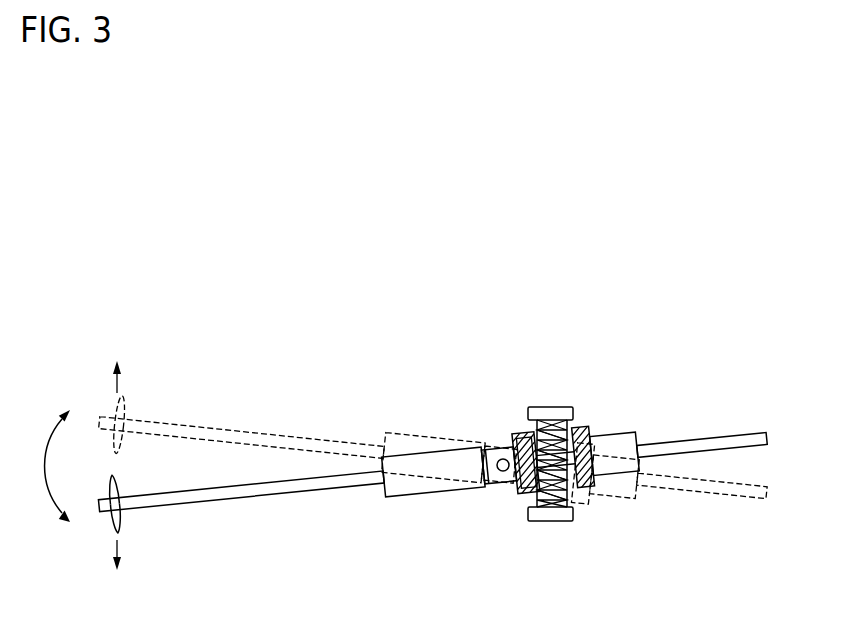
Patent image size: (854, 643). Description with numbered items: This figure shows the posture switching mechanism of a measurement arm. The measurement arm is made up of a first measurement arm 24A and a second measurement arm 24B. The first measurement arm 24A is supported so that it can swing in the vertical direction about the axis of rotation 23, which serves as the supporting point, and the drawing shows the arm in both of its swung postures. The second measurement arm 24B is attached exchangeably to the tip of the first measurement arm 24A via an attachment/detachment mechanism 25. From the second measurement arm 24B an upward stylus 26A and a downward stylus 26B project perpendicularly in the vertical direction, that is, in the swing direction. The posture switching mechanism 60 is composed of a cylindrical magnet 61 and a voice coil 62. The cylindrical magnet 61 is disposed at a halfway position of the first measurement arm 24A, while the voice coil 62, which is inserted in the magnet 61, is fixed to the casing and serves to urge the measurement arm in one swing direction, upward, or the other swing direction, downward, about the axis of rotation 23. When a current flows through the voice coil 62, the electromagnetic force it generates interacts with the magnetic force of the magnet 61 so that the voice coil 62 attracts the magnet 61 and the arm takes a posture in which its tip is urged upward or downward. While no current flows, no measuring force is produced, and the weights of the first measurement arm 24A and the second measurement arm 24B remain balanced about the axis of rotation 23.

The axis of rotation 23 is at (504, 458).
The first measurement arm 24A is at (492, 487).
The second measurement arm 24B is at (273, 498).
The attachment/detachment mechanism 25 is at (413, 497).
The upward stylus 26A is at (118, 481).
The downward stylus 26B is at (120, 528).
The posture switching mechanism 60 is at (635, 356).
The cylindrical magnet 61 is at (580, 428).
The voice coil 62 is at (555, 407).